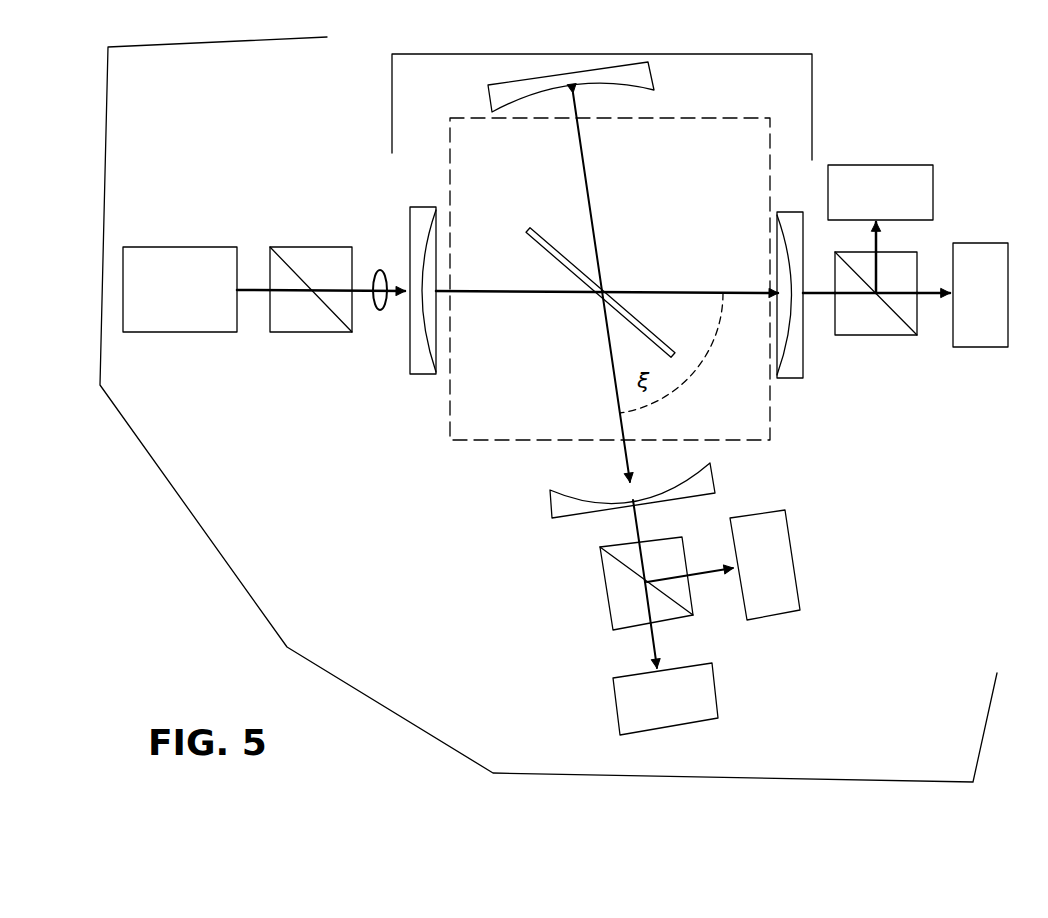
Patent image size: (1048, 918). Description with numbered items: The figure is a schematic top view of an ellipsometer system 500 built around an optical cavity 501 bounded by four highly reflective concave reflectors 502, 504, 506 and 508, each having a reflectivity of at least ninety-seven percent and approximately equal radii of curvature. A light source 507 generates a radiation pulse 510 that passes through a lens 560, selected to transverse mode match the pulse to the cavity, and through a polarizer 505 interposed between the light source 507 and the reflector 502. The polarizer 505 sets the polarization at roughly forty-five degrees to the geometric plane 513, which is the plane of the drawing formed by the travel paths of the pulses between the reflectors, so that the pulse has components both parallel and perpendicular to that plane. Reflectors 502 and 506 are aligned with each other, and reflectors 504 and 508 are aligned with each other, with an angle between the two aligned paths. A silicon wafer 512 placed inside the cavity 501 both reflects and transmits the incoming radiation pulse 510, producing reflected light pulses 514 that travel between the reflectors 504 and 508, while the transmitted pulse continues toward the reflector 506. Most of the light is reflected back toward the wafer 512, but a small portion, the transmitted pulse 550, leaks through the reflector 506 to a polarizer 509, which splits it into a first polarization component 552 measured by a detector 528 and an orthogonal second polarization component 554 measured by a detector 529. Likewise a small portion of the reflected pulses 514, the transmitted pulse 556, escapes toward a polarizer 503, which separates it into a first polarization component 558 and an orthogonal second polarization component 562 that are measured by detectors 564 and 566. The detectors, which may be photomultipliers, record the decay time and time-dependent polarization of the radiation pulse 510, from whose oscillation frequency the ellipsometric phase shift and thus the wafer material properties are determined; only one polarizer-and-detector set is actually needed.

The ellipsometer system 500 is at (286, 648).
The optical cavity 501 is at (592, 54).
The geometric plane 513 is at (755, 142).
The light source 507 is at (165, 334).
The polarizer 505 is at (303, 334).
The lens 560 is at (377, 268).
The reflector 502 is at (422, 378).
The radiation pulse 510 is at (520, 297).
The silicon wafer 512 is at (527, 221).
The reflected light pulses 514 is at (587, 187).
The reflector 506 is at (780, 214).
The reflector 508 is at (662, 78).
The reflector 504 is at (718, 472).
The transmitted pulse 556 is at (630, 521).
The polarizer 503 is at (605, 589).
The first polarization component 558 is at (648, 645).
The second polarization component 562 is at (708, 580).
The detector 564 is at (615, 706).
The detector 566 is at (798, 557).
The polarizer 509 is at (877, 338).
The transmitted pulse 550 is at (822, 298).
The first polarization component 552 is at (928, 298).
The second polarization component 554 is at (882, 237).
The detector 529 is at (936, 195).
The detector 528 is at (983, 350).